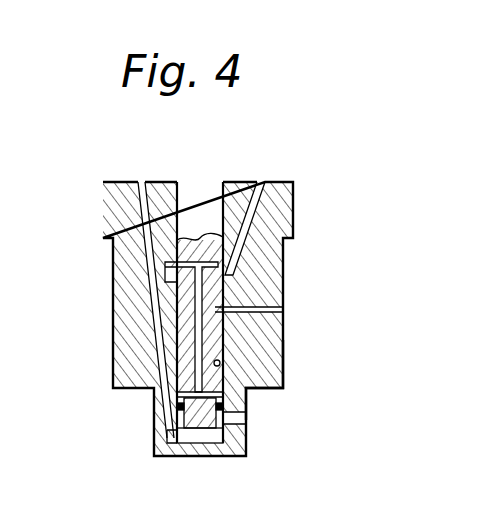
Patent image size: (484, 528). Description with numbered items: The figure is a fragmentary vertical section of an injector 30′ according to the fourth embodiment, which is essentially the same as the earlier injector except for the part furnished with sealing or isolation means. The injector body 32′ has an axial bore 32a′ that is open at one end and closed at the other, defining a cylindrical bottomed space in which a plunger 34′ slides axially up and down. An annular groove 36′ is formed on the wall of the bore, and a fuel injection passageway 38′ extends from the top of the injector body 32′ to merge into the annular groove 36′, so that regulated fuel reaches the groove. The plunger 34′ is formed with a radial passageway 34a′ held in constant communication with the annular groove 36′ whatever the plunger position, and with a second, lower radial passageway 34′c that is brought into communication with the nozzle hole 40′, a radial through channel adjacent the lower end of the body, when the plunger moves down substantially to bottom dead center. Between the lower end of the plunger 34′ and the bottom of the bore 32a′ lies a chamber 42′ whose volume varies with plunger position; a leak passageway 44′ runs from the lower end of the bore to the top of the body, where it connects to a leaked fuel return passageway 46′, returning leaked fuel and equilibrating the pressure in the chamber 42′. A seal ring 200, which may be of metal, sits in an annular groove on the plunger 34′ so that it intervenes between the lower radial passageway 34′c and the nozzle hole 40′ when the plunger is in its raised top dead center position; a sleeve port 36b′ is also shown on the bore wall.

The injector 30′ is at (240, 329).
The injector body 32′ is at (294, 190).
The axial bore 32a′ is at (243, 367).
The plunger 34′ is at (168, 339).
The radial passageway 34a′ is at (193, 237).
The second radial passageway 34′c is at (172, 425).
The annular groove 36′ is at (231, 281).
The sleeve port 36b′ is at (165, 368).
The fuel injection passageway 38′ is at (257, 217).
The nozzle hole 40′ is at (232, 424).
The chamber 42′ is at (203, 440).
The leak passageway 44′ is at (165, 268).
The leaked fuel return passageway 46′ is at (248, 330).
The seal ring 200 is at (226, 412).